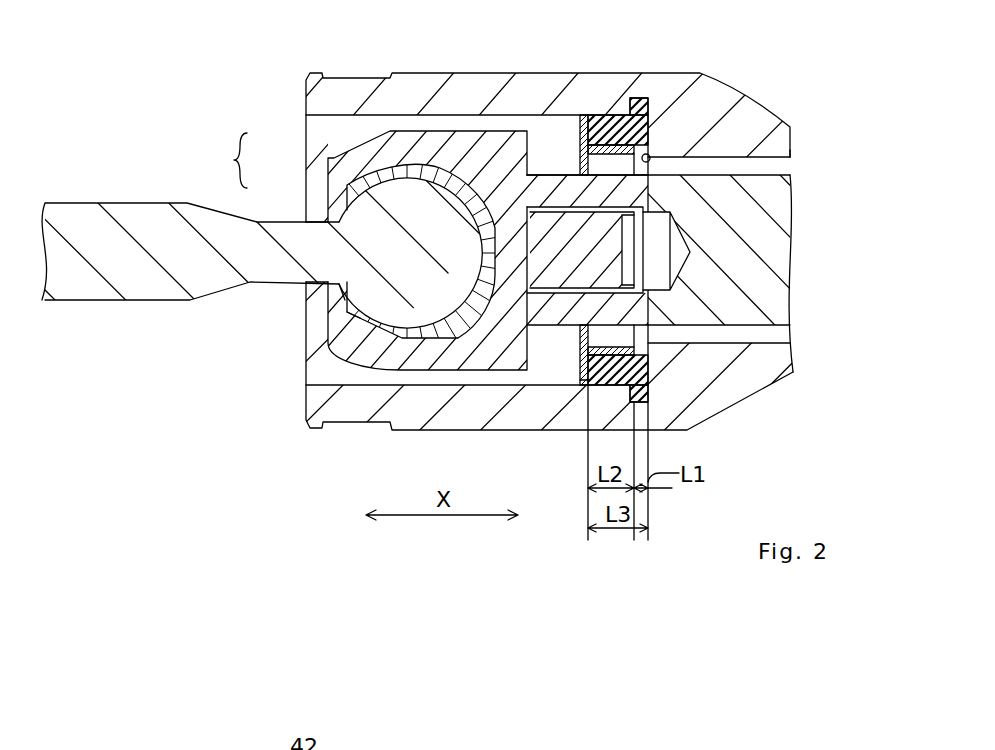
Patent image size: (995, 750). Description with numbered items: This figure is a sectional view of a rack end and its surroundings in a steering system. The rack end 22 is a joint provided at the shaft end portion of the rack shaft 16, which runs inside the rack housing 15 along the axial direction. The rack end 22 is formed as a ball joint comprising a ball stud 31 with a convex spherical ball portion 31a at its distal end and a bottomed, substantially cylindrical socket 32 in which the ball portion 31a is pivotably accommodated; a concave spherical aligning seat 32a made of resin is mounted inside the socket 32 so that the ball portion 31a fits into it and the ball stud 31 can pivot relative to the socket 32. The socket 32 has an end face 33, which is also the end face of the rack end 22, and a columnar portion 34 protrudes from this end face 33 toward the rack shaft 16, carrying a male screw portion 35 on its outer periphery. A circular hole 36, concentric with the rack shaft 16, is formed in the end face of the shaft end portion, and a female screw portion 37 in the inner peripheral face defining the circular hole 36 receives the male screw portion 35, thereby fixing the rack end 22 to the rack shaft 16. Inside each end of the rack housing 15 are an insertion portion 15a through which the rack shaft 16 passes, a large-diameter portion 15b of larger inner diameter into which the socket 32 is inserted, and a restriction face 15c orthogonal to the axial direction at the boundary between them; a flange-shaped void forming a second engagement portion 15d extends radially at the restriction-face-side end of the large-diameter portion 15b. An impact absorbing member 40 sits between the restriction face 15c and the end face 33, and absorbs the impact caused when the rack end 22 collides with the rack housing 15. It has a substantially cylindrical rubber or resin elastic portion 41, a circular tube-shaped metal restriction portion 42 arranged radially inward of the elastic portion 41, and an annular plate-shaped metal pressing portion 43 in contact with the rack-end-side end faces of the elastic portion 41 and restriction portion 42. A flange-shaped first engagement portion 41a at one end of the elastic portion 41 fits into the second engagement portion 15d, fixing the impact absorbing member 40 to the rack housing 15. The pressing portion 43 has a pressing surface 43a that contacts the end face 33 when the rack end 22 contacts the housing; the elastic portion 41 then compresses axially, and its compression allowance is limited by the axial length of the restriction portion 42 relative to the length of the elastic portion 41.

The rack housing 15 is at (408, 73).
The insertion portion 15a is at (790, 166).
The large-diameter portion 15b is at (533, 117).
The restriction face 15c is at (652, 158).
The second engagement portion 15d is at (648, 97).
The rack shaft 16 is at (718, 171).
The rack end 22 is at (218, 160).
The ball stud 31 is at (275, 221).
The ball portion 31a is at (335, 303).
The socket 32 is at (350, 143).
The aligning seat 32a is at (345, 320).
The end face 33 is at (560, 194).
The columnar portion 34 is at (557, 186).
The male screw portion 35 is at (610, 205).
The circular hole 36 is at (661, 285).
The female screw portion 37 is at (581, 275).
The impact absorbing member 40 is at (586, 114).
The elastic portion 41 is at (640, 368).
The first engagement portion 41a is at (613, 98).
The restriction portion 42 is at (622, 349).
The pressing portion 43 is at (581, 350).
The pressing surface 43a is at (578, 380).